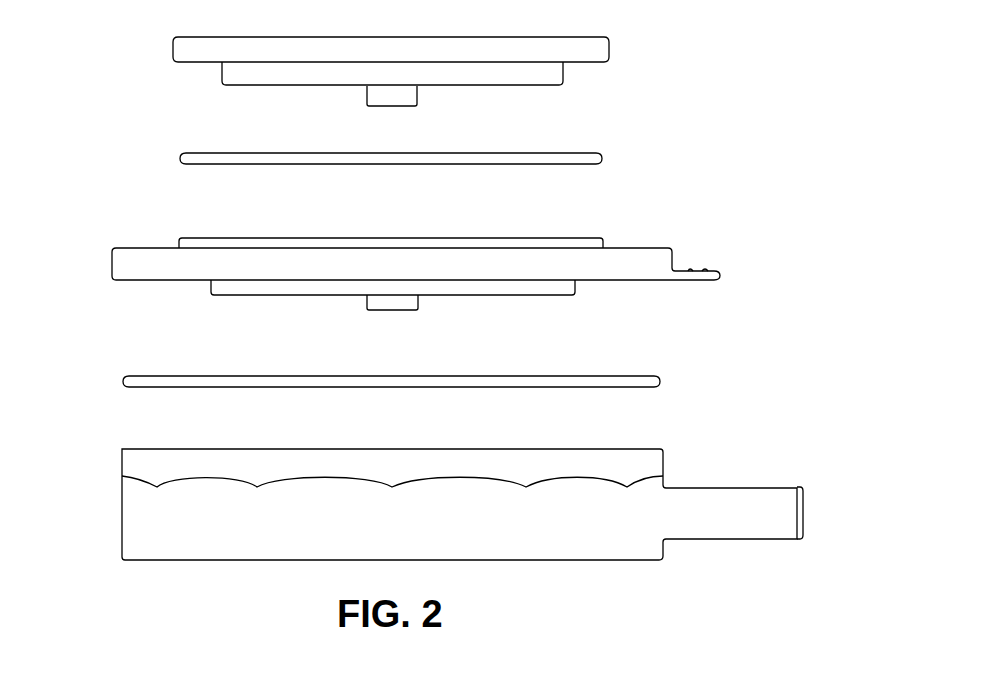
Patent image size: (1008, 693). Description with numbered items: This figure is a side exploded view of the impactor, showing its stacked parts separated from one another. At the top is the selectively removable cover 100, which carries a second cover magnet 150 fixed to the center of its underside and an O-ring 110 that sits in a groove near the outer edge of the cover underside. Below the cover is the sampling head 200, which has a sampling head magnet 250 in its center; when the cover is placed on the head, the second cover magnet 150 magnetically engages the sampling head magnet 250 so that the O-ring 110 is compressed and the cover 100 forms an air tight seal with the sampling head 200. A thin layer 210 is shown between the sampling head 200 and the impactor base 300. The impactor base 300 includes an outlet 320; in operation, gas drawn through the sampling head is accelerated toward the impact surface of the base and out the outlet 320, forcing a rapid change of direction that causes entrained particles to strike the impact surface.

The selectively removable cover 100 is at (557, 47).
The O-ring 110 is at (600, 163).
The second cover magnet 150 is at (407, 98).
The sampling head 200 is at (621, 258).
The second adhesive layer 210 is at (657, 385).
The sampling head magnet 250 is at (408, 300).
The impactor base 300 is at (143, 518).
The outlet 320 is at (784, 512).